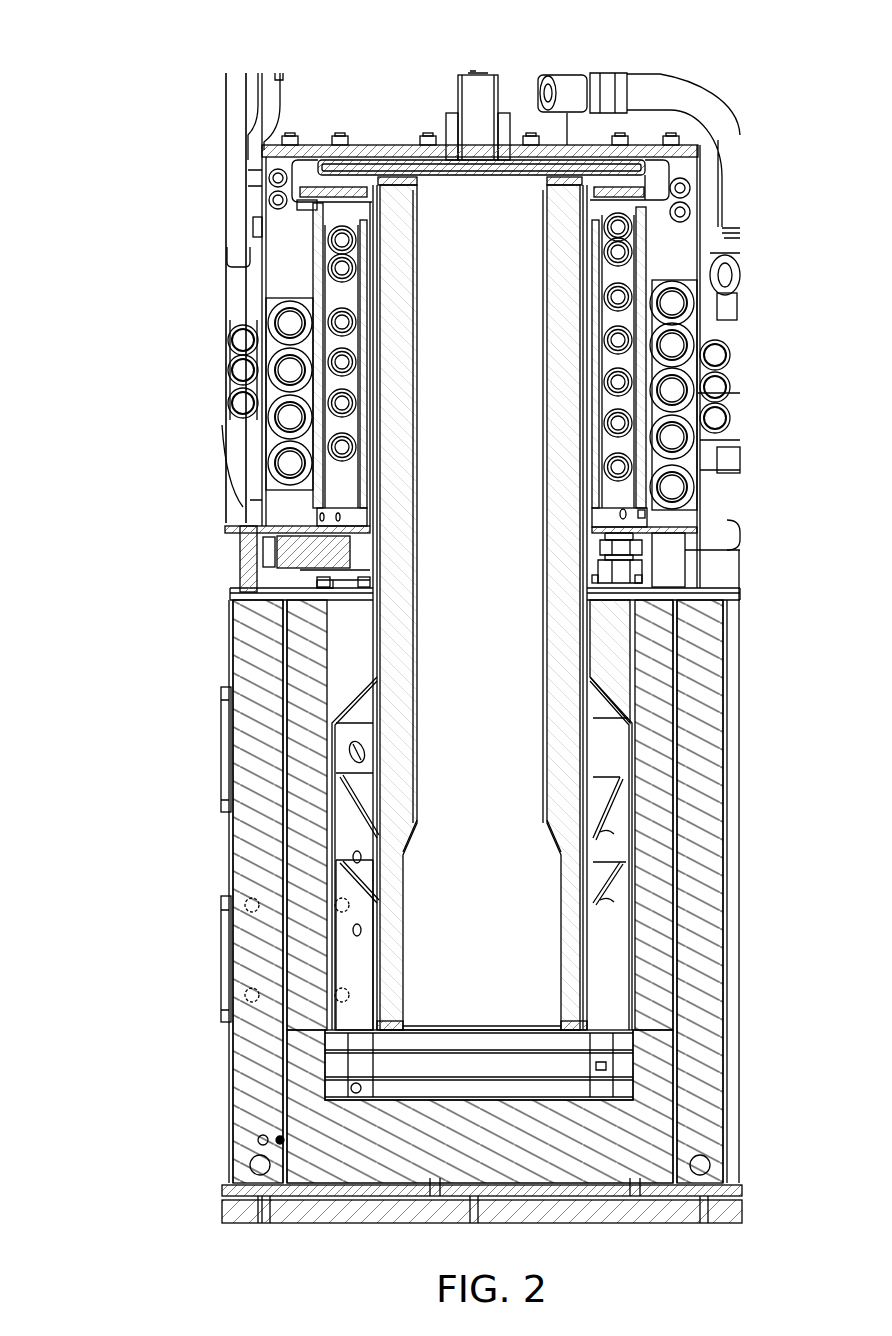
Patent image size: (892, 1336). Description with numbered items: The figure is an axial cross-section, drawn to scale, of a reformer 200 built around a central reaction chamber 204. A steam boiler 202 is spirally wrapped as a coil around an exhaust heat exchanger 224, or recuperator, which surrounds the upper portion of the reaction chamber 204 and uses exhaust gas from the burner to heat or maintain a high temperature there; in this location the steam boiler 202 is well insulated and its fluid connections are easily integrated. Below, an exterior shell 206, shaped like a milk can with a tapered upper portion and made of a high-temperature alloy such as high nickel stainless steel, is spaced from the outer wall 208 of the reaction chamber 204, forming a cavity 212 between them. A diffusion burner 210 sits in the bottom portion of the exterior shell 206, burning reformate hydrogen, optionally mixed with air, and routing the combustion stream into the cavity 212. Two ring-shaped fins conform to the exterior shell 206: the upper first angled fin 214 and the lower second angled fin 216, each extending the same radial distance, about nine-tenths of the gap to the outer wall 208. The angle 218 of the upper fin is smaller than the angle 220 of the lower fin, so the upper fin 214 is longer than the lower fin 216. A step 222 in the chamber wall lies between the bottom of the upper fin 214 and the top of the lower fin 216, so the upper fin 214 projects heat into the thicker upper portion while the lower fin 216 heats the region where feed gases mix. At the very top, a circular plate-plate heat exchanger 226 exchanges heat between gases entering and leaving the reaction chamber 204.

The reformer 200 is at (241, 42).
The steam boiler 202 is at (228, 364).
The reaction chamber 204 is at (405, 352).
The exterior shell 206 is at (345, 700).
The outer wall 208 is at (378, 637).
The diffusion burner 210 is at (330, 1042).
The cavity 212 is at (350, 977).
The first angled fin 214 is at (593, 798).
The second angled fin 216 is at (597, 885).
The angle 218 is at (612, 820).
The angle 220 is at (612, 892).
The step 222 is at (415, 855).
The exhaust heat exchanger 224 is at (315, 250).
The circular plate-plate heat exchanger 226 is at (367, 163).